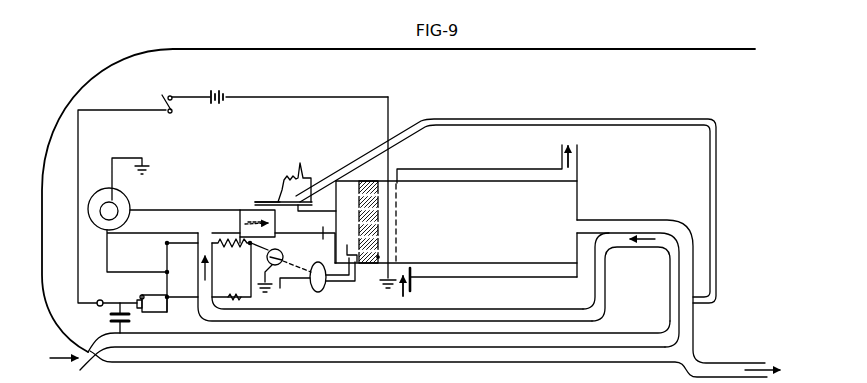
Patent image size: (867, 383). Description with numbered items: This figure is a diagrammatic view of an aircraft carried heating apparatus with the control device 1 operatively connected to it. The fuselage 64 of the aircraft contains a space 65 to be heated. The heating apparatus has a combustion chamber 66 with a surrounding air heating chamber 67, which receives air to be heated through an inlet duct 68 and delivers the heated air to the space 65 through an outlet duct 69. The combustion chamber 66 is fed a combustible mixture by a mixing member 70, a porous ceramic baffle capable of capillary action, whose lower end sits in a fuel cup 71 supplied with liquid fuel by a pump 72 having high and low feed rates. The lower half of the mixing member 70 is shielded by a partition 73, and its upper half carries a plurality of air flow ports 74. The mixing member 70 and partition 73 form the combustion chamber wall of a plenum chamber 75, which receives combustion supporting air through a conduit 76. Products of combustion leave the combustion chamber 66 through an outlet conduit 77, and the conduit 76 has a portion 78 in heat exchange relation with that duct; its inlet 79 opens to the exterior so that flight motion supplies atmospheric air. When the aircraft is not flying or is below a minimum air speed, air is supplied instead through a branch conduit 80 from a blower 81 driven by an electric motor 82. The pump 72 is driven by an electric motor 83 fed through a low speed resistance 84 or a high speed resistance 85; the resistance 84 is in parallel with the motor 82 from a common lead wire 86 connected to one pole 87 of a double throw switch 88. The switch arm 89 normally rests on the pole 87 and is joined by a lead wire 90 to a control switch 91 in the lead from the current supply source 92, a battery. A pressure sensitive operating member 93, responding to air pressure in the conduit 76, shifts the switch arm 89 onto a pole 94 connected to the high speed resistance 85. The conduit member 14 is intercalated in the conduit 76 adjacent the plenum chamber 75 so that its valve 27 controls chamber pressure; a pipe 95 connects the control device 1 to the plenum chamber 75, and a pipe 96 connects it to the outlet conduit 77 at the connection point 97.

The control device 1 is at (269, 183).
The conduit member 14 is at (240, 208).
The valve 27 is at (239, 218).
The fuselage 64 is at (100, 72).
The space 65 is at (510, 103).
The combustion chamber 66 is at (482, 230).
The air heating chamber 67 is at (476, 175).
The inlet duct 68 is at (412, 289).
The outlet duct 69 is at (580, 160).
The mixing member 70 is at (368, 264).
The fuel cup 71 is at (345, 245).
The pump 72 is at (328, 287).
The partition 73 is at (327, 233).
The air flow ports 74 is at (374, 188).
The plenum chamber 75 is at (345, 191).
The conduit 76 is at (284, 310).
The outlet conduit 77 is at (640, 219).
The portion 78 is at (660, 249).
The inlet 79 is at (98, 362).
The branch conduit 80 is at (168, 216).
The blower 81 is at (130, 200).
The electric motor 82 is at (104, 225).
The electric motor 83 is at (283, 255).
The low speed resistance 84 is at (228, 245).
The high speed resistance 85 is at (238, 294).
The common lead wire 86 is at (170, 303).
The pole 87 is at (147, 311).
The double throw switch 88 is at (127, 300).
The switch arm 89 is at (102, 299).
The lead wire 90 is at (80, 131).
The control switch 91 is at (174, 107).
The current supply source 92 is at (228, 94).
The pressure sensitive operating member 93 is at (110, 318).
The pole 94 is at (144, 295).
The pipe 95 is at (321, 209).
The pipe 96 is at (533, 120).
The connection point 97 is at (697, 306).